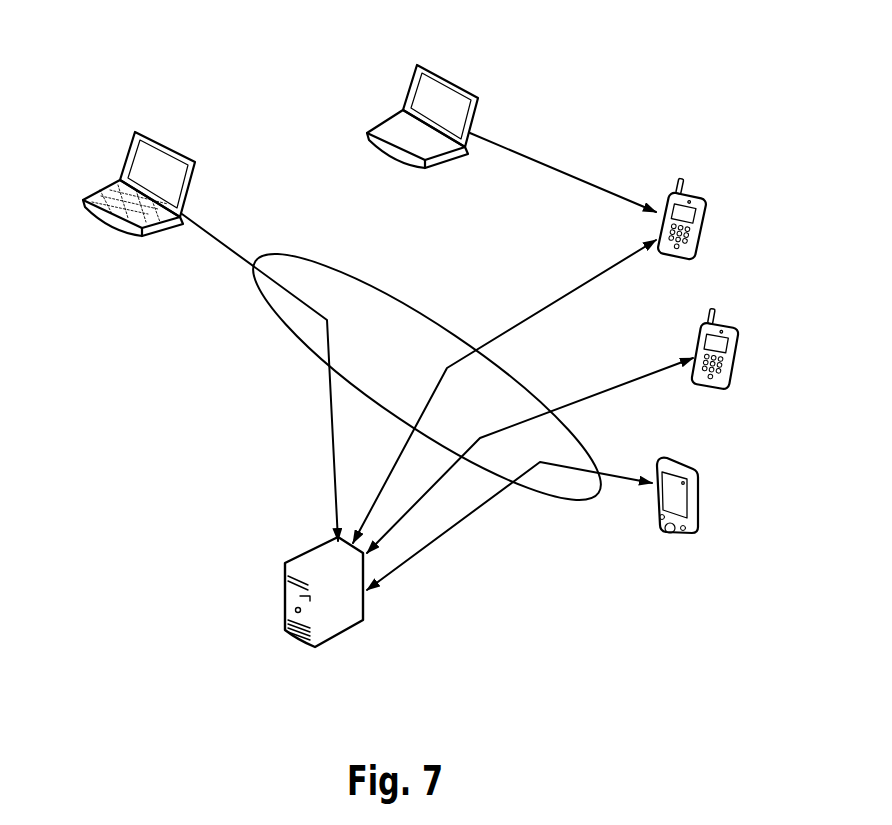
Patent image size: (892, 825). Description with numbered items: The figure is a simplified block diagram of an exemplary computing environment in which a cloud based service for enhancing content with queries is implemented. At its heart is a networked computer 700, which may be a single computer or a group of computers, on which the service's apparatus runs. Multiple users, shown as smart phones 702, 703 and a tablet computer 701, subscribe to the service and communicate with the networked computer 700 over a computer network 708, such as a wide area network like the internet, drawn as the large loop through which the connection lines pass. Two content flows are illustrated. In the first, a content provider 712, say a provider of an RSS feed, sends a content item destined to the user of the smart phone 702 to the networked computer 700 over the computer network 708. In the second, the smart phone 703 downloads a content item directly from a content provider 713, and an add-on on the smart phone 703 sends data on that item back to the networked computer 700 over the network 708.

The networked computer 700 is at (313, 565).
The tablet computer 701 is at (670, 498).
The smart phone 702 is at (728, 368).
The smart phone 703 is at (693, 248).
The computer network 708 is at (350, 297).
The content provider 712 is at (147, 156).
The content provider 713 is at (433, 97).